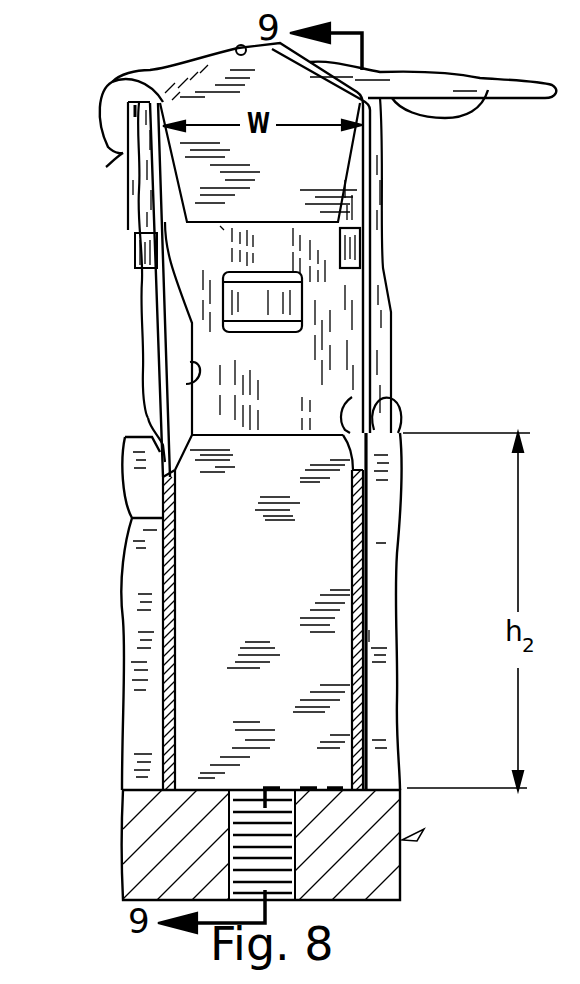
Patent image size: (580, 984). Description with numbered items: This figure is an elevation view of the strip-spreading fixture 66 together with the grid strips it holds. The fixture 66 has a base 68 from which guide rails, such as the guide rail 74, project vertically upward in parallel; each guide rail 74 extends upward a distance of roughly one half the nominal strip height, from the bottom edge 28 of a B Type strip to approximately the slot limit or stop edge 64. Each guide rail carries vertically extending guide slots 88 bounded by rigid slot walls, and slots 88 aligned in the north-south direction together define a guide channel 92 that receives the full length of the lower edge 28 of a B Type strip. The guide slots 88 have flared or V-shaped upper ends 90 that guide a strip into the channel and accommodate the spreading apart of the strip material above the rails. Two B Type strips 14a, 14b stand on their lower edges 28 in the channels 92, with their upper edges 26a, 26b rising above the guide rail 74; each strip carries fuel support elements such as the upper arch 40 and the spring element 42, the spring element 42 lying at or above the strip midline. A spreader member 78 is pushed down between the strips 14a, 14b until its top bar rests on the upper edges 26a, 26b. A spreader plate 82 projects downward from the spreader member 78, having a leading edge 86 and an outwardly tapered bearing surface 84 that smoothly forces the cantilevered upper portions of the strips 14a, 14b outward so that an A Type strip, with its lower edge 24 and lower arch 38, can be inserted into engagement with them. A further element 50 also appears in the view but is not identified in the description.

The B Type grid strip 14a is at (130, 502).
The B Type grid strip 14b is at (367, 590).
The lower edge 24 is at (114, 82).
The upper edge 26a is at (106, 166).
The upper edge 26b is at (488, 90).
The lower edge 28 is at (170, 793).
The lower arch 38 is at (293, 300).
The fuel support element 40 is at (133, 266).
The spring element 42 is at (188, 382).
The loop 50 is at (236, 50).
The stop edge 64 is at (158, 425).
The fixture 66 is at (420, 833).
The base 68 is at (400, 850).
The guide rail 74 is at (400, 520).
The spreader member 78 is at (392, 92).
The spreader plate 82 is at (202, 175).
The outwardly tapered bearing surface 84 is at (143, 212).
The leading edge 86 is at (222, 232).
The guide slot 88 is at (352, 397).
The flared upper end 90 is at (380, 408).
The guide channel 92 is at (370, 636).